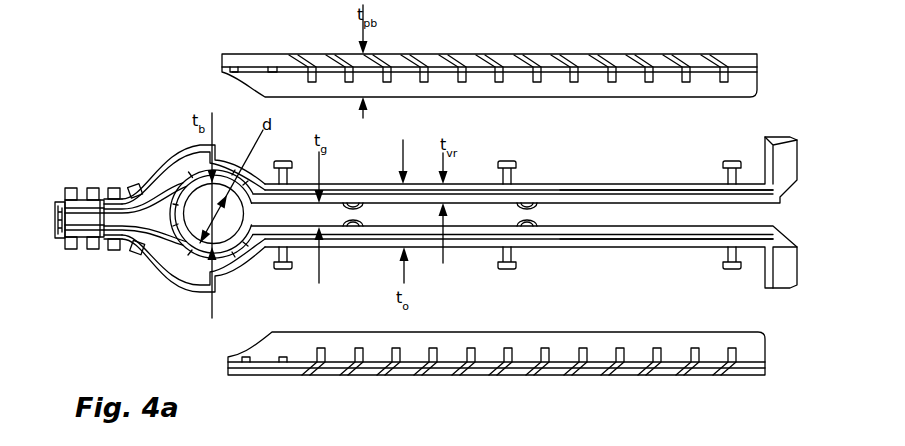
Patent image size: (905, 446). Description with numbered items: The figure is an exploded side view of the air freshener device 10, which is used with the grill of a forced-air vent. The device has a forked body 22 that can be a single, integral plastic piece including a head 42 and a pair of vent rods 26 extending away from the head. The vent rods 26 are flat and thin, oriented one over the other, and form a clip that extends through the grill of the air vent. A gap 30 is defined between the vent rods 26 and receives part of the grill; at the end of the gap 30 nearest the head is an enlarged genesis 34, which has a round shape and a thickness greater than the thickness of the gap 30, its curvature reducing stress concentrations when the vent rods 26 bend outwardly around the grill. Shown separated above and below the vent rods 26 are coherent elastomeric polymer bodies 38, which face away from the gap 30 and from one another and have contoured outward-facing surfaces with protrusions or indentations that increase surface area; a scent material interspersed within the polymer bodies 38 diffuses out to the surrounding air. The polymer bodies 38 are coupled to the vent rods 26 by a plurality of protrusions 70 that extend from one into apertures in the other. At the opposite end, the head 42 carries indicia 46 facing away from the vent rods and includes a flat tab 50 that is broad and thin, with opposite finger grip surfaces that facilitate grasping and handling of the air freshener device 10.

The air freshener device 10 is at (131, 128).
The forked body 22 is at (578, 188).
The vent rods 26 is at (663, 190).
The gap 30 is at (707, 215).
The enlarged genesis 34 is at (190, 243).
The coherent elastomeric polymer bodies 38 is at (548, 77).
The head 42 is at (143, 180).
The indicia 46 is at (55, 222).
The flat tab 50 is at (112, 224).
The protrusions 70 is at (497, 160).